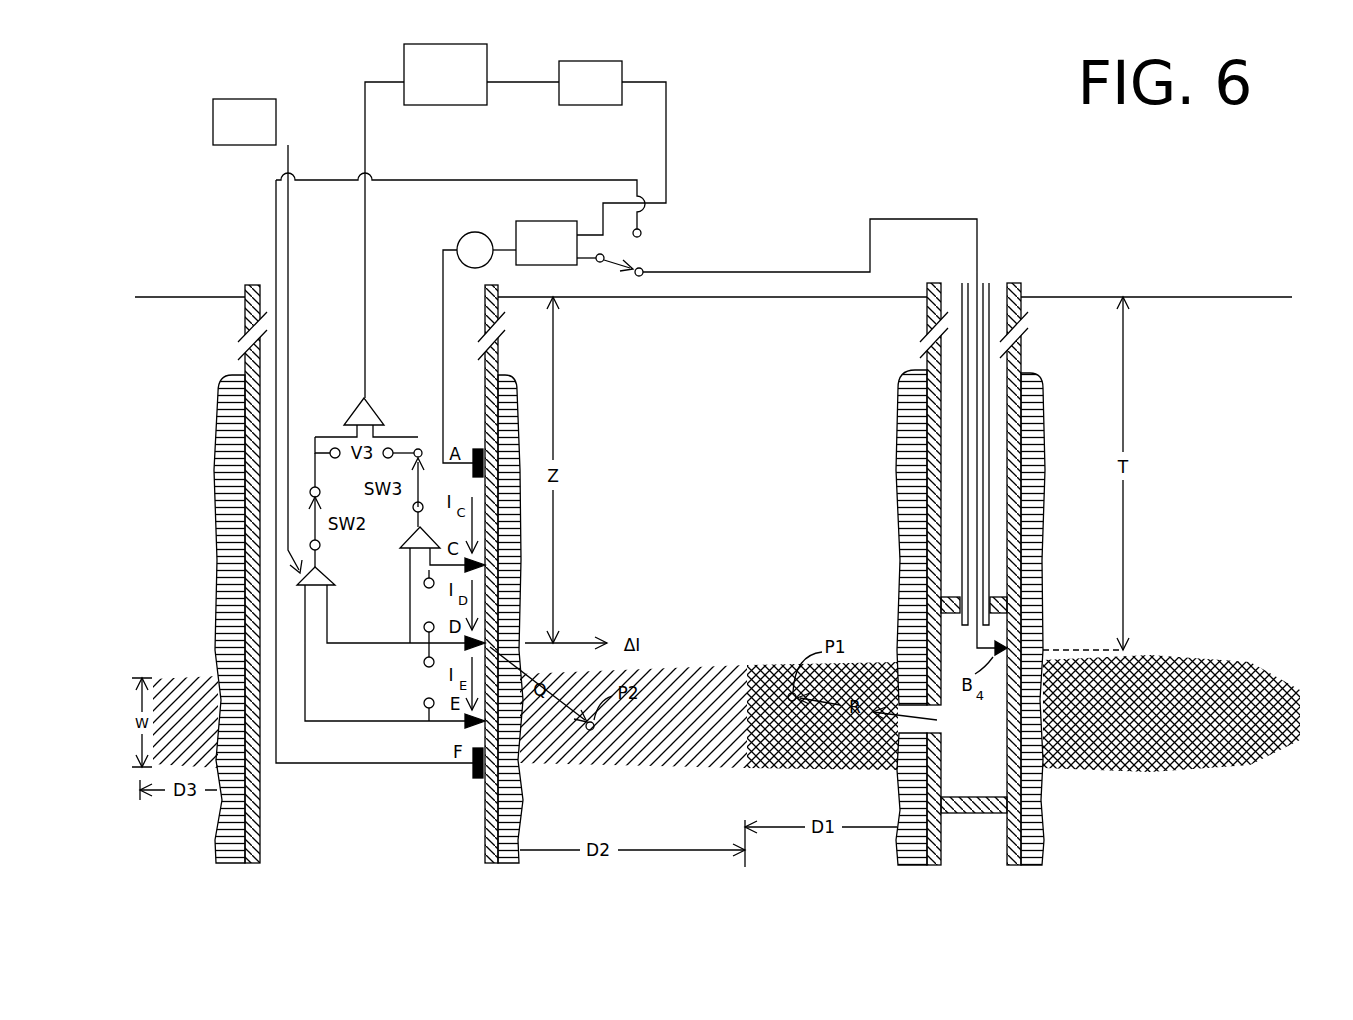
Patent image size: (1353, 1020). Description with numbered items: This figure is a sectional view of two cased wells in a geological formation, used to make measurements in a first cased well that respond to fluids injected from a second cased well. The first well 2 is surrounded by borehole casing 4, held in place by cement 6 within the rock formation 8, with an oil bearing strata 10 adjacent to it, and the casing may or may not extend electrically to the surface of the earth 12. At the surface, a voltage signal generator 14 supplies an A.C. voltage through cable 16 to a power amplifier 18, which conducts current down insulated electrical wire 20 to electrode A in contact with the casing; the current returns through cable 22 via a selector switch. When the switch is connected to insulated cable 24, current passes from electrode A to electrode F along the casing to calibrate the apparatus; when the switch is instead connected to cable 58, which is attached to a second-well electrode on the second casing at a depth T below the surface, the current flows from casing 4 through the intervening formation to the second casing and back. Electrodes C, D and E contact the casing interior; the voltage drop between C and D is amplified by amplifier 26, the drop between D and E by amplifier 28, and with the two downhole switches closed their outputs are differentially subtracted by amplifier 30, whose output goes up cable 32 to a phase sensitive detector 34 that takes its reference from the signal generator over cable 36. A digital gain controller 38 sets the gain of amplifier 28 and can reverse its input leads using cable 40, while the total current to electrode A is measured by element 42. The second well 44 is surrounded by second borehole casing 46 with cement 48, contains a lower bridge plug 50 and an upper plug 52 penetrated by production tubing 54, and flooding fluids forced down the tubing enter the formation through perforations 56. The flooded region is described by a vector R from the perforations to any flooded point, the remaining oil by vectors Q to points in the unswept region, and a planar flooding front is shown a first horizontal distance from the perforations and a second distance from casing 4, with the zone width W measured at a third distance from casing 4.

The borehole 2 is at (358, 802).
The borehole casing 4 is at (487, 803).
The cement 6 is at (512, 808).
The rock formation 8 is at (630, 803).
The oil bearing strata 10 is at (643, 750).
The surface of the earth 12 is at (620, 298).
The voltage signal generator 14 is at (603, 61).
The cable 16 is at (666, 163).
The power amplifier 18 is at (516, 230).
The insulated electrical wire 20 is at (443, 268).
The cable 22 is at (596, 262).
The insulated cable 24 is at (460, 180).
The amplifier 26 is at (406, 541).
The amplifier 28 is at (338, 578).
The amplifier 30 is at (370, 408).
The cable 32 is at (366, 318).
The phase sensitive detector 34 is at (404, 62).
The cable 36 is at (502, 82).
The digital gain controller 38 is at (276, 110).
The cable 40 is at (289, 245).
The current measuring element 42 is at (460, 240).
The second well 44 is at (992, 832).
The second borehole casing 46 is at (1017, 360).
The cement 48 is at (1027, 462).
The lower bridge plug 50 is at (1003, 806).
The upper plug 52 is at (993, 603).
The production tubing 54 is at (990, 283).
The perforations 56 is at (937, 727).
The cable 58 is at (910, 219).